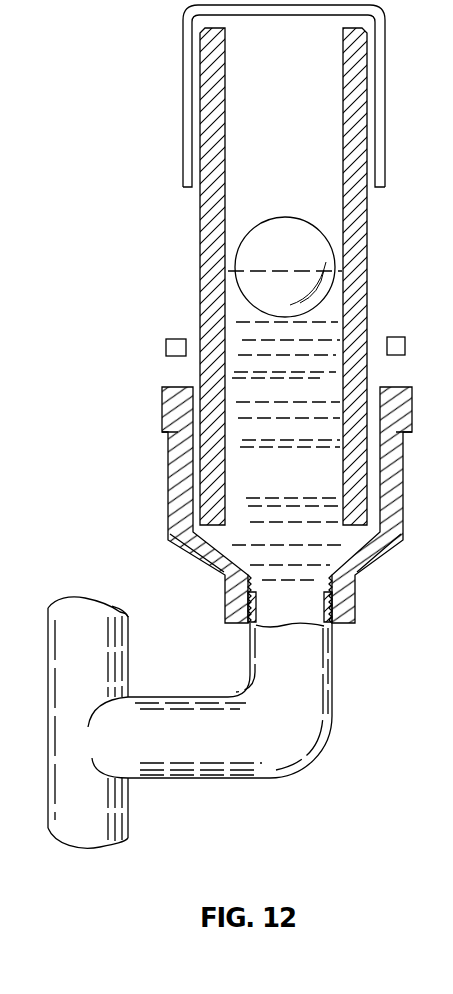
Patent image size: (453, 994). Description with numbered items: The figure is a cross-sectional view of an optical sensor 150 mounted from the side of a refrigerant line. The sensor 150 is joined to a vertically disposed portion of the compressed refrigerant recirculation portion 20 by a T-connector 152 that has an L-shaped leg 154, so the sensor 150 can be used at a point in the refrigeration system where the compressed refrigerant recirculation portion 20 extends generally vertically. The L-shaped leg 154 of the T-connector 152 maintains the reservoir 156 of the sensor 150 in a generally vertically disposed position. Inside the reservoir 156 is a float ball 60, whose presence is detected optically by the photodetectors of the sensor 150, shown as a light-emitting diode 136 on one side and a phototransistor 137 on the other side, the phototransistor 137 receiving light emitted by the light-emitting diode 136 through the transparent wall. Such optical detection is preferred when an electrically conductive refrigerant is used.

The sensor 150 is at (265, 314).
The reservoir 156 is at (403, 192).
The float ball 60 is at (243, 260).
The light-emitting diode 136 is at (166, 346).
The phototransistor 137 is at (396, 337).
The compressed refrigerant recirculation portion 20 is at (48, 612).
The T-connector 152 is at (266, 715).
The L-shaped leg 154 is at (320, 672).